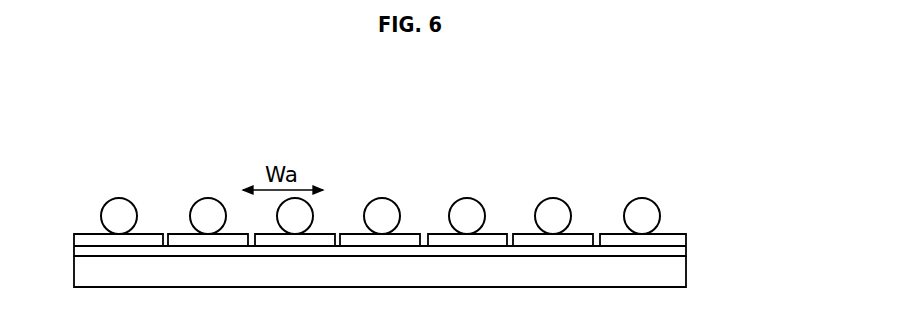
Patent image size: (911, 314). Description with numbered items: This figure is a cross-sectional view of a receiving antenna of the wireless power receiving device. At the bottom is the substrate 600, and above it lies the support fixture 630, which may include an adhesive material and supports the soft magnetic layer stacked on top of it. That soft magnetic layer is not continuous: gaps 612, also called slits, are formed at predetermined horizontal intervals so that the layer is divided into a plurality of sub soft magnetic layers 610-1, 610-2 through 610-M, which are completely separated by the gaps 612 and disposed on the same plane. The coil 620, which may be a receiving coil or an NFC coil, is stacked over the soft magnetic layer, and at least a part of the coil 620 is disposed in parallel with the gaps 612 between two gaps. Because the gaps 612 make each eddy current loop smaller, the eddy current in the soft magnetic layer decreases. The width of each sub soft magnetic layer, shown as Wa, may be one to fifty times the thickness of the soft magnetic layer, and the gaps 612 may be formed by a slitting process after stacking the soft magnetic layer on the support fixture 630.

The substrate 600 is at (687, 272).
The support fixture 630 is at (687, 250).
The gaps 612 is at (423, 236).
The sub soft magnetic layer 610-1 is at (88, 233).
The sub soft magnetic layer 610-2 is at (173, 233).
The sub soft magnetic layer 610-M is at (669, 232).
The coil 620 is at (555, 199).